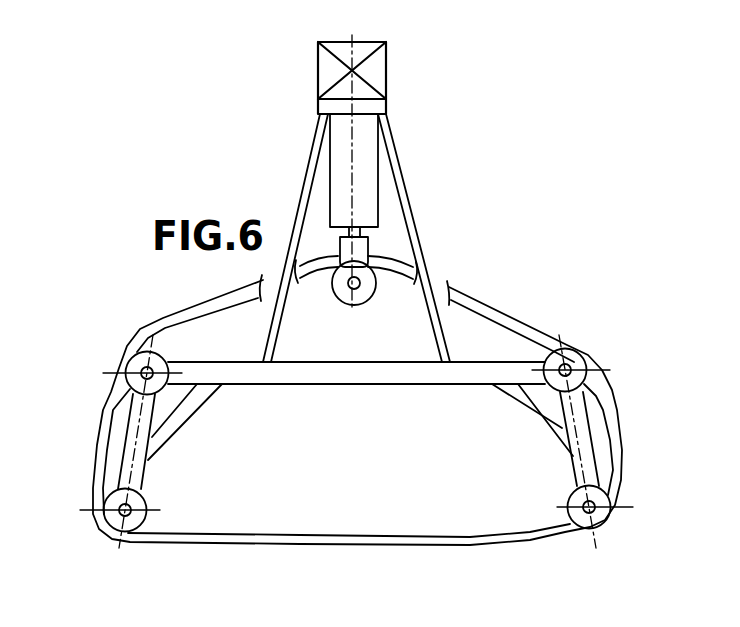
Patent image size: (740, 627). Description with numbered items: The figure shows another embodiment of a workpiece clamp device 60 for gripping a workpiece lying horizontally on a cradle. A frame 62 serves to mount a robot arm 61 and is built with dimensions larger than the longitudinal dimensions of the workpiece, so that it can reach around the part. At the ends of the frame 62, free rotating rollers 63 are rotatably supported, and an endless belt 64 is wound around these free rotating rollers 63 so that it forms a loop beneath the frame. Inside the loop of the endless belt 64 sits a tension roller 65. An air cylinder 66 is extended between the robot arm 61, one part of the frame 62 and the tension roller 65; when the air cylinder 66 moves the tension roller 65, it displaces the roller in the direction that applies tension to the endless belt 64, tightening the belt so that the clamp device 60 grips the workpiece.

The workpiece clamp device 60 is at (582, 212).
The robot arm 61 is at (380, 68).
The frame 62 is at (450, 355).
The free rotating rollers 63 is at (130, 362).
The endless belt 64 is at (362, 540).
The tension roller 65 is at (372, 290).
The air cylinder 66 is at (370, 160).